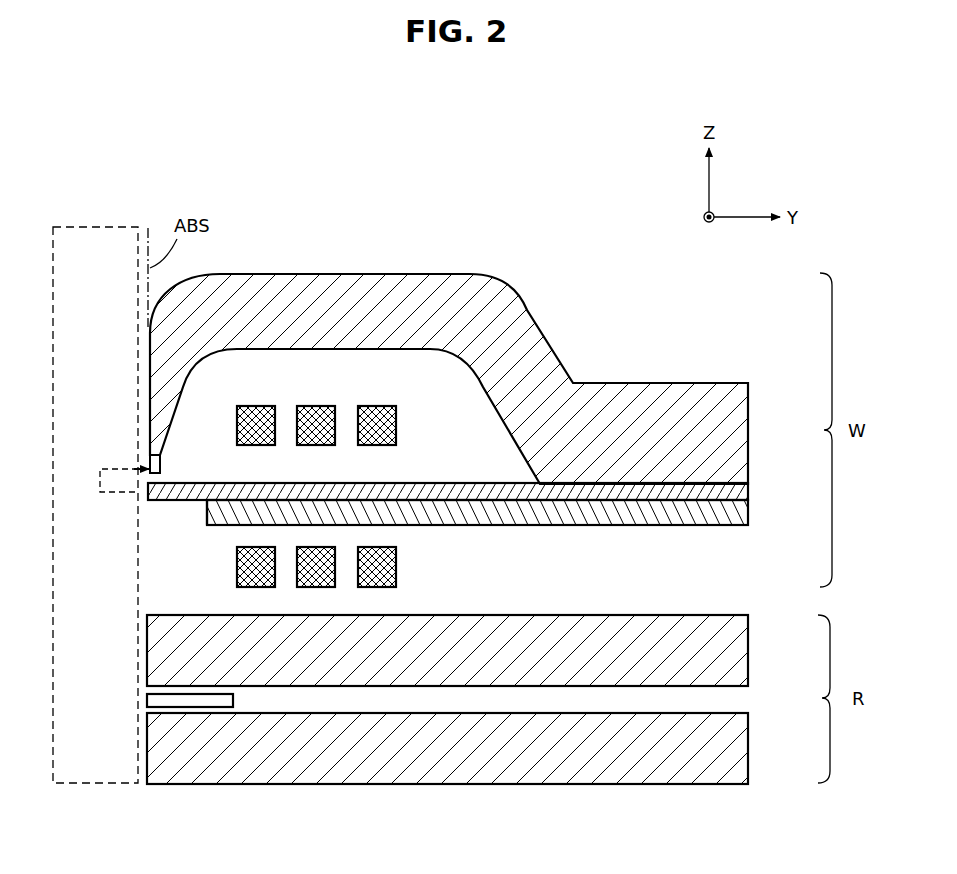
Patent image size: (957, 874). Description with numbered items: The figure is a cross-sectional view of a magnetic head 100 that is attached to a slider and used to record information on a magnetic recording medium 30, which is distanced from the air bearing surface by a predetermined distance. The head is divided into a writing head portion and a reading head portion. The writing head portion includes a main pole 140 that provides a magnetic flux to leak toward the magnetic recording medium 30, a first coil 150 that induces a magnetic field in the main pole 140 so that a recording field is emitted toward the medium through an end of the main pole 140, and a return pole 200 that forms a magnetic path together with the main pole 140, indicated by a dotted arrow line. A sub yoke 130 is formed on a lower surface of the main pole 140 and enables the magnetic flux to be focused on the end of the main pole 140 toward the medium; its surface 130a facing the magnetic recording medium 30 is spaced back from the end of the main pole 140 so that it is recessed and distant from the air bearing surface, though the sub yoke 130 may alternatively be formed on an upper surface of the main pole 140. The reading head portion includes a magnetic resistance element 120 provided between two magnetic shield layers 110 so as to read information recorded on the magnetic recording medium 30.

The magnetic head 100 is at (533, 225).
The magnetic recording medium 30 is at (118, 786).
The return pole 200 is at (522, 318).
The first coil 150 is at (396, 426).
The main pole 140 is at (660, 493).
The sub yoke 130 is at (592, 517).
The surface of the sub yoke 130a is at (207, 505).
The magnetic shield layers 110 is at (735, 737).
The magnetic resistance element 120 is at (188, 700).